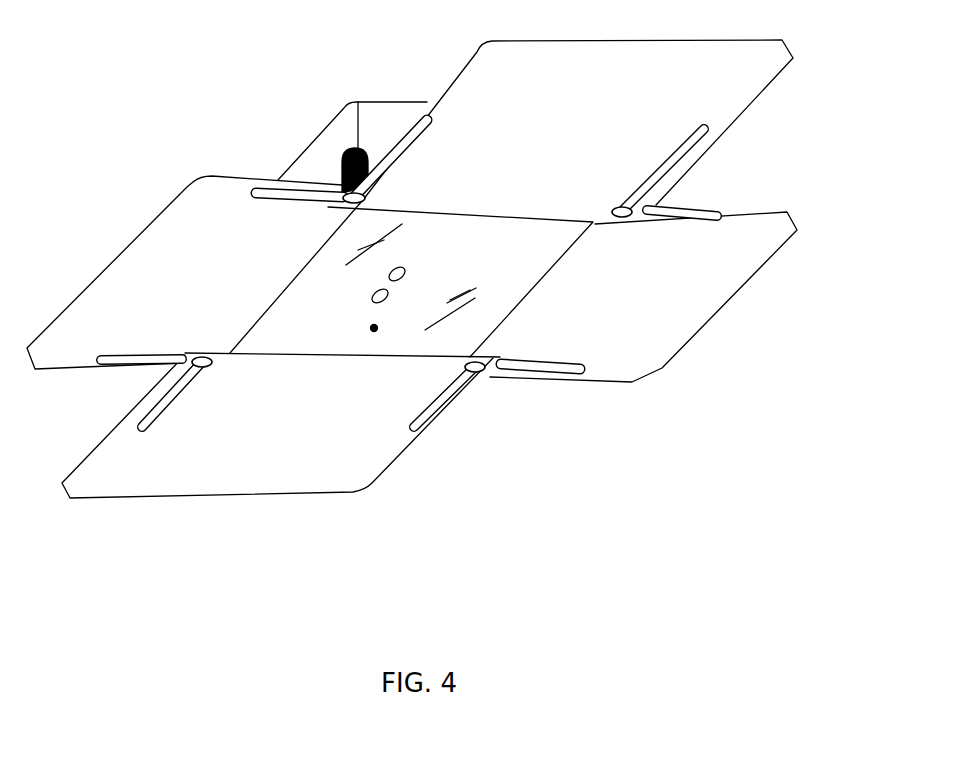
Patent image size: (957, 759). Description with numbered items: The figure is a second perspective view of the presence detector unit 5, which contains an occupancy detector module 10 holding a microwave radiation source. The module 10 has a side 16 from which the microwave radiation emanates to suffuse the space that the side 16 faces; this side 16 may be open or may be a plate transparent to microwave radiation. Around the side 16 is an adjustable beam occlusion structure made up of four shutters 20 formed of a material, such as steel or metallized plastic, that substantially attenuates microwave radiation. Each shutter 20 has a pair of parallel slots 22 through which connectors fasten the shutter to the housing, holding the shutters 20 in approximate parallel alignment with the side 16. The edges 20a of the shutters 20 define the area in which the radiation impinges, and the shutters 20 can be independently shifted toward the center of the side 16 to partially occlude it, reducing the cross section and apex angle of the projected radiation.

The presence detector unit 5 is at (643, 327).
The occupancy detector module 10 is at (387, 101).
The side 16 is at (375, 331).
The shutters 20 is at (163, 207).
The edges 20a is at (323, 247).
The slots 22 is at (152, 407).